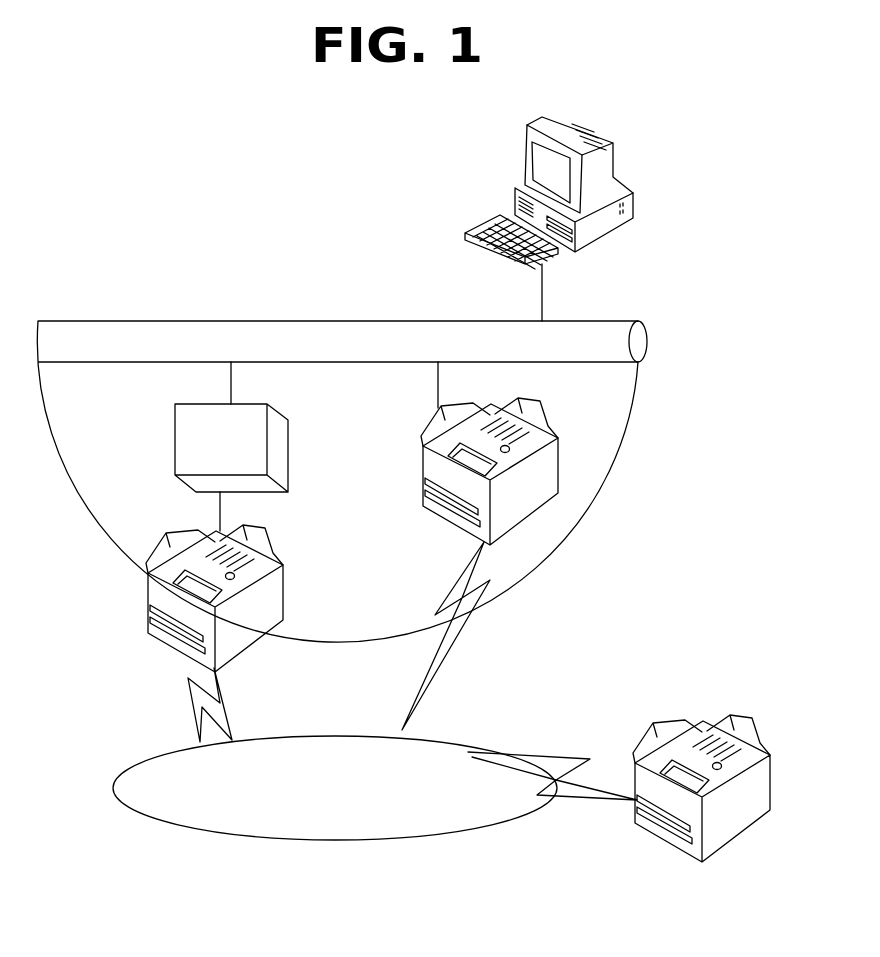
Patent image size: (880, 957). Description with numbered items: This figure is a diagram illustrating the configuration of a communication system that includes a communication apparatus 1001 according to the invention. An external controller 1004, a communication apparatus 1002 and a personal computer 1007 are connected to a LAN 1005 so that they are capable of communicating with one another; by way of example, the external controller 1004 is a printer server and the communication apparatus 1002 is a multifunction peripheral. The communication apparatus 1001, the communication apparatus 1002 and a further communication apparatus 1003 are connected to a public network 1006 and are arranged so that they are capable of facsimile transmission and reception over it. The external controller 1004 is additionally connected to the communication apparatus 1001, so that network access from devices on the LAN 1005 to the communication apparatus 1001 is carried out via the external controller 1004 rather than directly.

The communication apparatus 1001 is at (285, 598).
The communication apparatus 1002 is at (562, 470).
The communication apparatus 1003 is at (705, 705).
The external controller 1004 is at (288, 442).
The LAN 1005 is at (630, 300).
The public network 1006 is at (445, 737).
The personal computer 1007 is at (615, 167).